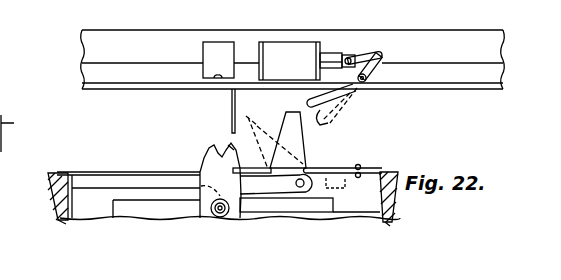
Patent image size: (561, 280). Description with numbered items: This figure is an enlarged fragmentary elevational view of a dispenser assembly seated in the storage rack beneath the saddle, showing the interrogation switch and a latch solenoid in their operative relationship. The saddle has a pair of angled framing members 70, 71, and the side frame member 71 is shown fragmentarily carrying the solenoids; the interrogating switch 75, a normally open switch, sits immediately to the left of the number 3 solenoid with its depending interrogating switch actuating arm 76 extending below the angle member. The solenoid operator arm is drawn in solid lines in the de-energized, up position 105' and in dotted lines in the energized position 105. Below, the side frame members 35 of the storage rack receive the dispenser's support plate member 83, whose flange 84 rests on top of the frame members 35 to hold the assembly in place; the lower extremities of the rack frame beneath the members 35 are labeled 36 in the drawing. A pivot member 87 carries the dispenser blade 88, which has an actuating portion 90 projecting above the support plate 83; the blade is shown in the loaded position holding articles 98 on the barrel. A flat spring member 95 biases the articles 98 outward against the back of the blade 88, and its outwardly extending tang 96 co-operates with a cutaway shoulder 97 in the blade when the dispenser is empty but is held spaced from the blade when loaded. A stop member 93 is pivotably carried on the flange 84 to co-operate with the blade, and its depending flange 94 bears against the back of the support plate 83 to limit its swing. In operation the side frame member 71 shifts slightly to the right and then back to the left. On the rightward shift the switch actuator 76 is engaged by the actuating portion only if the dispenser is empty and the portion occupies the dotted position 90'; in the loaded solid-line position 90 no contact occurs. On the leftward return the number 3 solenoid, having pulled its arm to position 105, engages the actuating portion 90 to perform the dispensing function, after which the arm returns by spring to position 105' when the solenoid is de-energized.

The angled framing member 71 is at (453, 30).
The angled framing member 70 is at (21, 132).
The interrogating switch 75 is at (216, 50).
The number 3 solenoid 3 is at (289, 61).
The interrogating switch actuating arm 76 is at (232, 107).
The operator arm 105 is at (359, 83).
The operator arm 105' is at (331, 121).
The actuating portion 90 is at (269, 131).
The actuating portion 90' is at (271, 133).
The dispenser blade 88 is at (208, 167).
The cutaway shoulder 97 is at (228, 145).
The pivot member 87 is at (296, 183).
The stop member 93 is at (333, 168).
The depending flange 94 is at (335, 187).
The flange 84 is at (383, 171).
The support plate member 83 is at (343, 212).
The articles 98 is at (278, 216).
The flat spring member 95 is at (100, 218).
The tang 96 is at (190, 218).
The side frame members 35 is at (50, 196).
The support foot 36 is at (58, 226).